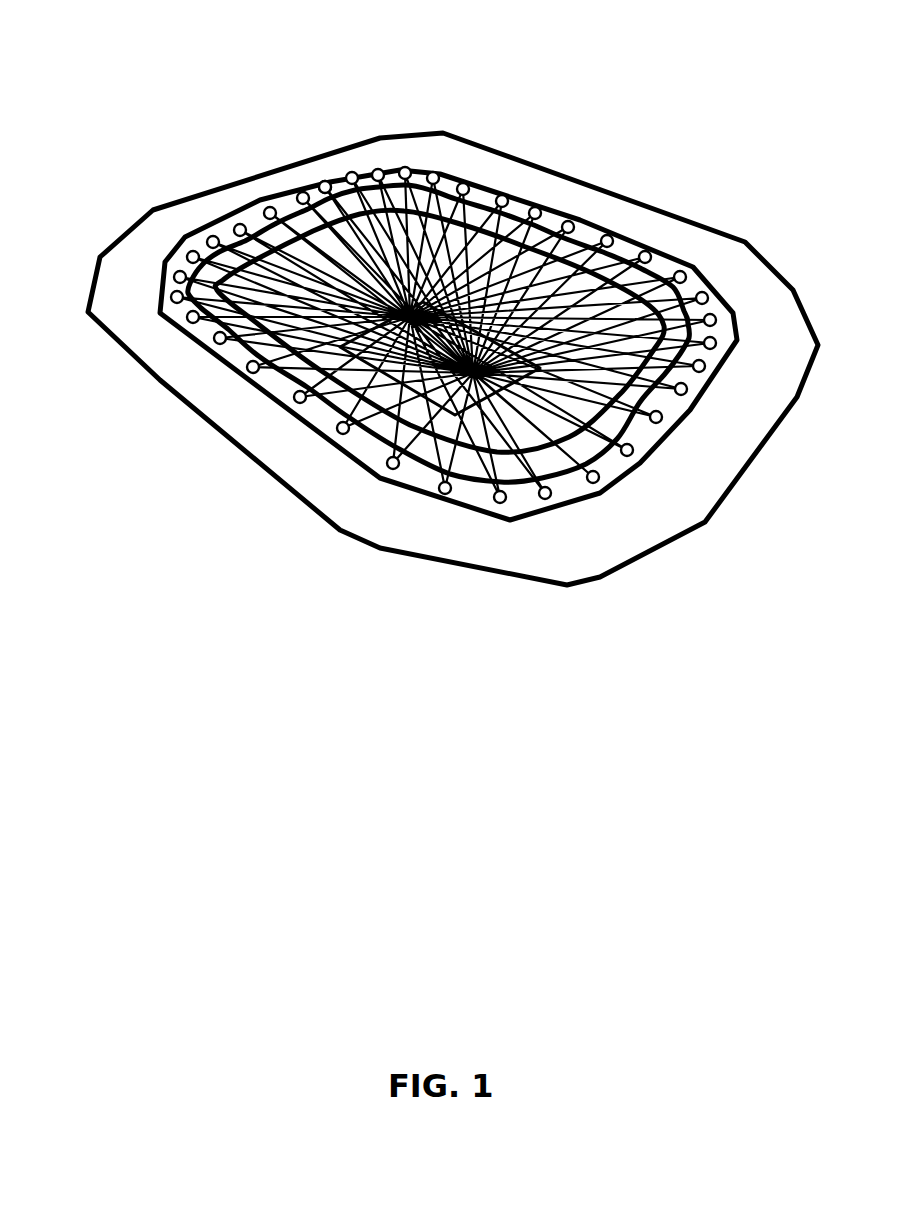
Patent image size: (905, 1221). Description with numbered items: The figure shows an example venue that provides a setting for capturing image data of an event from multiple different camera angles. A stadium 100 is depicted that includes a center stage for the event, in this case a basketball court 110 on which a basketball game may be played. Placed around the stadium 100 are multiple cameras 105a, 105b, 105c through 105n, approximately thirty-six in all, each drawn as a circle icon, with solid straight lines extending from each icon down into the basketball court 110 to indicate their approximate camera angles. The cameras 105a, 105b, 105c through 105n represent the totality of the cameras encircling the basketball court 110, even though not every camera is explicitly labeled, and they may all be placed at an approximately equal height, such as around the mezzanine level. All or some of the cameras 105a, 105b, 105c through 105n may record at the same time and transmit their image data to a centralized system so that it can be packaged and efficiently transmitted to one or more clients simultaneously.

The stadium 100 is at (627, 200).
The camera 105a is at (264, 208).
The camera 105b is at (299, 193).
The camera 105c is at (322, 181).
The camera 105n is at (232, 222).
The basketball court 110 is at (372, 368).